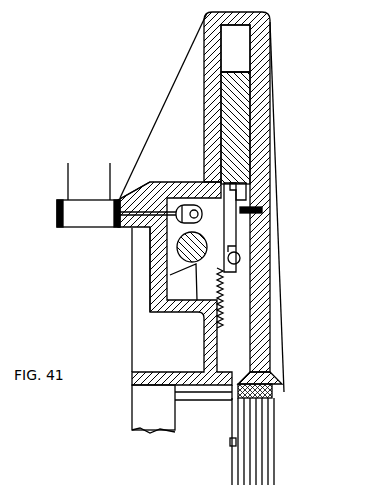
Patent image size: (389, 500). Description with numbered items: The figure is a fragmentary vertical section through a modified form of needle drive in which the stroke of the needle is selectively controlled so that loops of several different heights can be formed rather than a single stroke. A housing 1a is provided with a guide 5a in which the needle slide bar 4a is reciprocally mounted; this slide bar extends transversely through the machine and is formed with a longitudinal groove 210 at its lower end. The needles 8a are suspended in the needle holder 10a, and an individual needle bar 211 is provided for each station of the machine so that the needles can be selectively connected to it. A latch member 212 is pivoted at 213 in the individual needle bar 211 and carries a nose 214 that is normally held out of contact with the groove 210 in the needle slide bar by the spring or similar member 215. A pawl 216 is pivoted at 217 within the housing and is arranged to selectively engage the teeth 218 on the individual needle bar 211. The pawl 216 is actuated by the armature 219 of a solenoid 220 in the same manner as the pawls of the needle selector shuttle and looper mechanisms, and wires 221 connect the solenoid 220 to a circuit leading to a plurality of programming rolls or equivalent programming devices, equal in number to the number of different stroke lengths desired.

The housing 1a is at (204, 108).
The needle slide bar 4a is at (257, 192).
The guide 5a is at (240, 42).
The needles 8a is at (250, 449).
The needle holder 10a is at (196, 402).
The longitudinal groove 210 is at (236, 188).
The individual needle bar 211 is at (235, 333).
The latch member 212 is at (228, 226).
The pivot 213 is at (243, 258).
The nose 214 is at (218, 183).
The spring 215 is at (246, 210).
The pawl 216 is at (195, 273).
The pivot 217 is at (180, 248).
The teeth 218 is at (220, 303).
The armature 219 is at (152, 185).
The solenoid 220 is at (77, 214).
The wires 221 is at (105, 177).